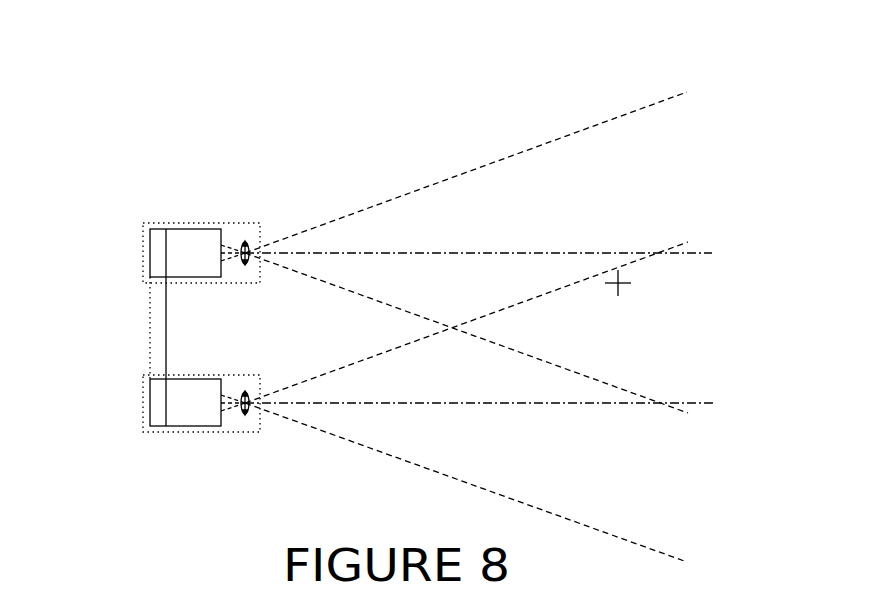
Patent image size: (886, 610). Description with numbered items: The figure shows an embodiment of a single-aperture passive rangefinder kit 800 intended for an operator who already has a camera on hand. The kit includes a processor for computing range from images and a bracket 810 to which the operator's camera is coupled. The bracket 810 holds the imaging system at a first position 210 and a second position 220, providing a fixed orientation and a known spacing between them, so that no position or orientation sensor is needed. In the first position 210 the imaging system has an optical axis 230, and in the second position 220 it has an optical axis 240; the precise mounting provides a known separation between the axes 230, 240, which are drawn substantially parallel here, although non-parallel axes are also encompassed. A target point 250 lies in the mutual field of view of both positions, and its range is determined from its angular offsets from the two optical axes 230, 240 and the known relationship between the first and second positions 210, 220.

The first position 210 is at (40, 235).
The second position 220 is at (35, 392).
The optical axis 230 is at (538, 253).
The optical axis 240 is at (557, 403).
The target point 250 is at (632, 283).
The single-aperture passive rangefinder kit 800 is at (722, 72).
The bracket 810 is at (167, 332).